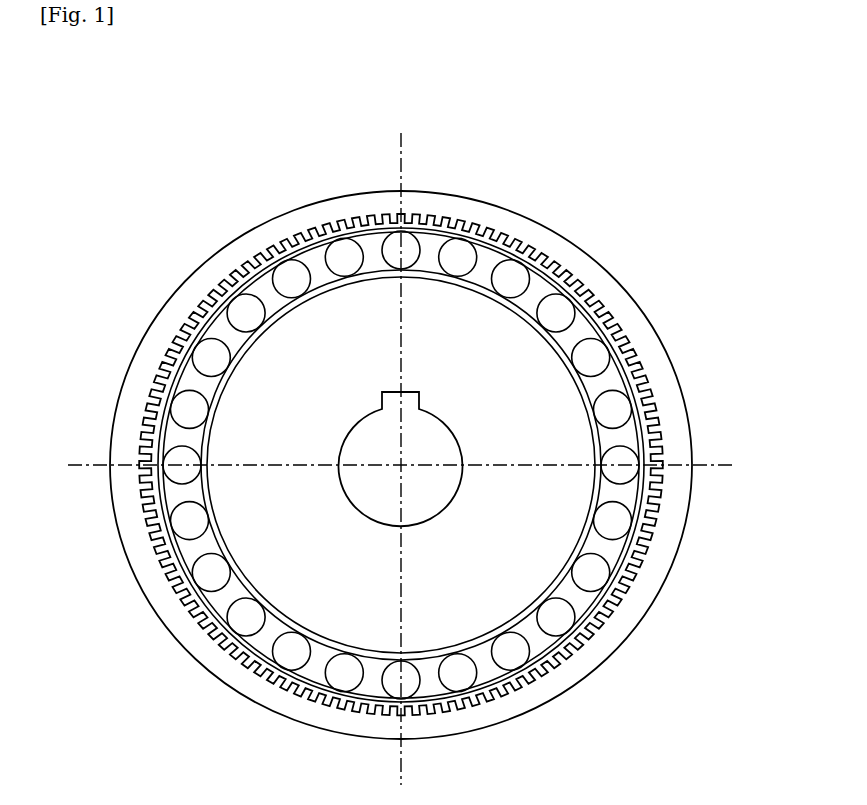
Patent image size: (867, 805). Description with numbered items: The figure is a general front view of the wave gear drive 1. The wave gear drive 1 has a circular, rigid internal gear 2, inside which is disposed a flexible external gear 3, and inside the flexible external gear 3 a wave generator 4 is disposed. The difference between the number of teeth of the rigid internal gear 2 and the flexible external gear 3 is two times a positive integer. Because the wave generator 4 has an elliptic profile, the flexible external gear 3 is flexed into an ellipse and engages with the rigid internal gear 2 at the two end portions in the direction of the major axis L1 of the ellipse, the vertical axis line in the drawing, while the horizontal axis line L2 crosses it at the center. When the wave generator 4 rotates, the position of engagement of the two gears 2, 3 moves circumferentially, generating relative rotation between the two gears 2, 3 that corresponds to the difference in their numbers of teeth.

The wave gear drive 1 is at (435, 402).
The rigid internal gear 2 is at (620, 297).
The flexible external gear 3 is at (633, 363).
The wave generator 4 is at (548, 430).
The major axis L1 is at (398, 157).
The horizontal axis line L2 is at (92, 465).